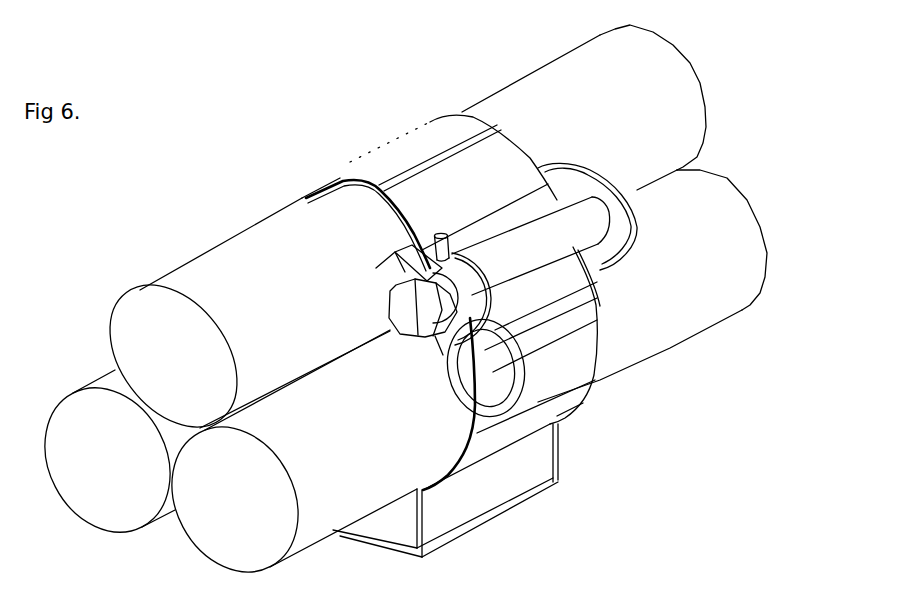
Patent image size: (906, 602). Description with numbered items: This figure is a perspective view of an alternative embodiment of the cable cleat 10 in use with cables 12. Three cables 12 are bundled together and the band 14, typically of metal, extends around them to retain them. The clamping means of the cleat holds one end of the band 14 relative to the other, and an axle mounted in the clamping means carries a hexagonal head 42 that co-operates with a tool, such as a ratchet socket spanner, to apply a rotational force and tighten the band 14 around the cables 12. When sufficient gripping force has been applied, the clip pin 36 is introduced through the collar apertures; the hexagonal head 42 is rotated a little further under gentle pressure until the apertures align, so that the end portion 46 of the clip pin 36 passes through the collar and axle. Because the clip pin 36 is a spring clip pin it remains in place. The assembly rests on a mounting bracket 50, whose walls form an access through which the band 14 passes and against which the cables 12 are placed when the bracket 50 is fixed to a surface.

The cable cleat 10 is at (394, 309).
The cables 12 is at (394, 309).
The band 14 is at (515, 302).
The clip pin 36 is at (542, 299).
The hexagonal head 42 is at (370, 308).
The end portion 46 is at (365, 247).
The mounting bracket 50 is at (445, 500).